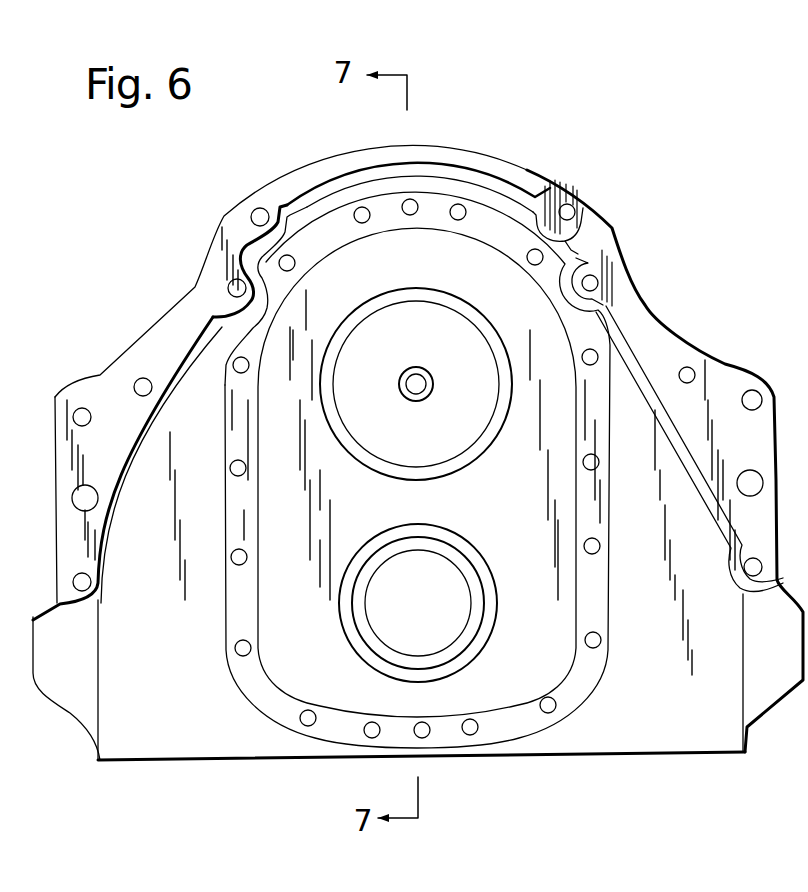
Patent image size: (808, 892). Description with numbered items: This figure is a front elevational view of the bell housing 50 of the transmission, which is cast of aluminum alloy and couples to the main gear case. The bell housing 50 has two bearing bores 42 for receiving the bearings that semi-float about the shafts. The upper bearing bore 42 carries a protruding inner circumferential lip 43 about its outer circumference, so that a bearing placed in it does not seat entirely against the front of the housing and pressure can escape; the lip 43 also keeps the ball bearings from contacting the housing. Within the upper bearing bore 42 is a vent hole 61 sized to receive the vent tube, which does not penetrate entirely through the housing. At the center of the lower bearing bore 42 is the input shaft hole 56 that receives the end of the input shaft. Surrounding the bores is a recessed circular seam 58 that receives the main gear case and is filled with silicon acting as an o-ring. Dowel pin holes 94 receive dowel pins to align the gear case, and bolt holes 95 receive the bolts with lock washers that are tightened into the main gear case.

The bell housing 50 is at (456, 95).
The bearing bore 42 is at (497, 358).
The protruding inner circumferential lip 43 is at (483, 387).
The input shaft hole 56 is at (431, 600).
The recessed circular seam 58 is at (275, 705).
The vent hole 61 is at (418, 378).
The dowel pin holes 94 is at (414, 202).
The bolt holes 95 is at (234, 463).